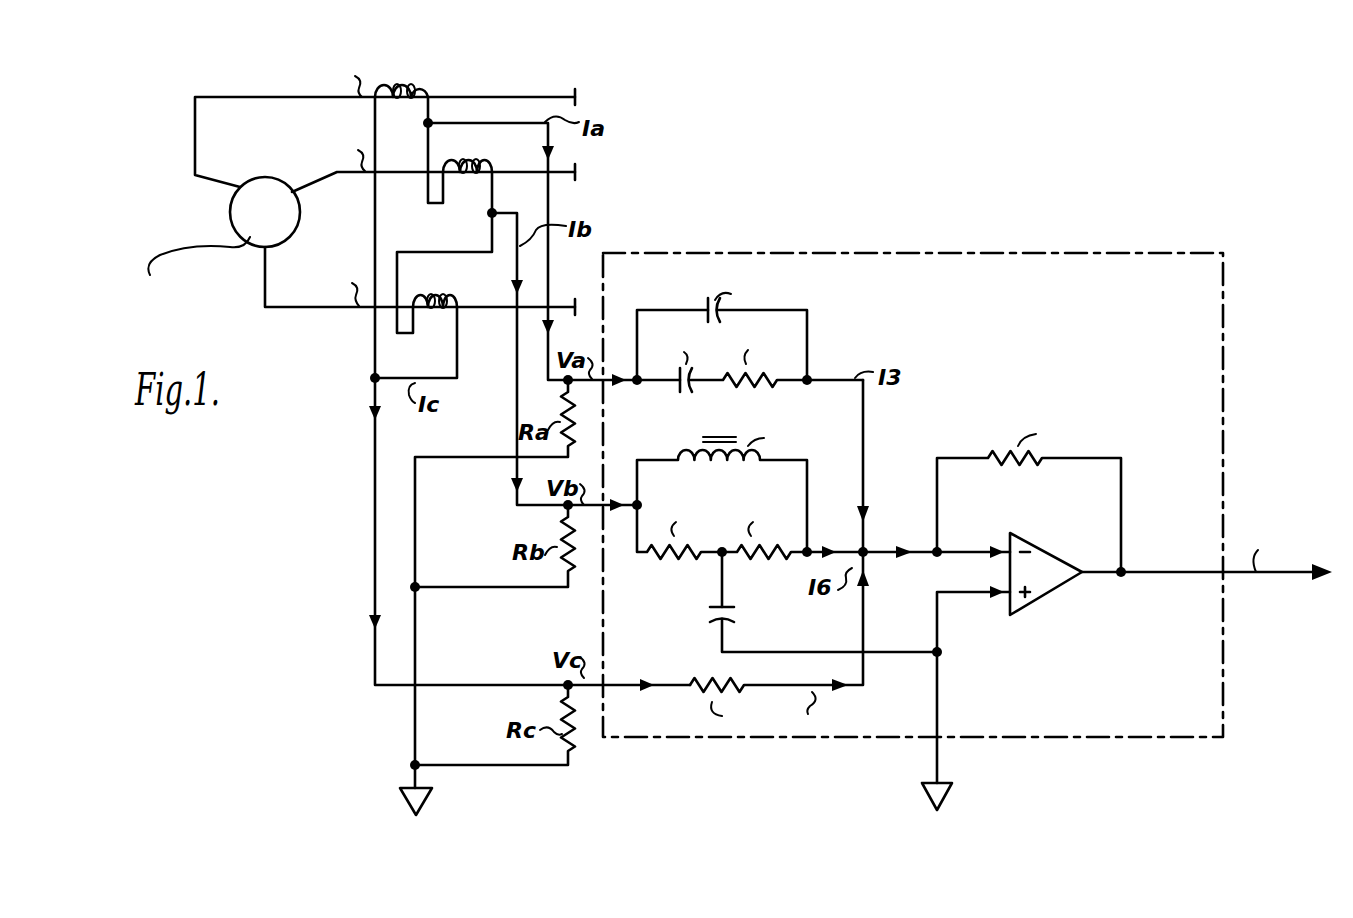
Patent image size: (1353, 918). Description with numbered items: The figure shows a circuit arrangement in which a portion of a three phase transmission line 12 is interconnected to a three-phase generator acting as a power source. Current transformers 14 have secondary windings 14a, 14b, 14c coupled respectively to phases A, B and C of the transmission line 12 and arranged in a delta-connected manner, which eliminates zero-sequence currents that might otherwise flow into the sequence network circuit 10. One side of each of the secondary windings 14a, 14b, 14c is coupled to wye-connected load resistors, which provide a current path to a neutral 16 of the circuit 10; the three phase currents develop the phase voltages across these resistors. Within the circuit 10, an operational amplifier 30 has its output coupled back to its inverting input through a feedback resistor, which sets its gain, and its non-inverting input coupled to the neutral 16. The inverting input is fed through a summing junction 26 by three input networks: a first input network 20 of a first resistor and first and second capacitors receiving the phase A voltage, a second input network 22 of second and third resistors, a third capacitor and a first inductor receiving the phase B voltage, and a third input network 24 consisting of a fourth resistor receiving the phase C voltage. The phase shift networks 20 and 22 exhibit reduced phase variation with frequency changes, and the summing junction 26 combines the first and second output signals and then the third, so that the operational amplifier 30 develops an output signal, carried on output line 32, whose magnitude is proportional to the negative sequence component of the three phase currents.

The sequence network circuit 10 is at (1170, 255).
The three phase transmission line 12 is at (618, 150).
The current transformers 14 is at (452, 209).
The secondary winding of phase A current transformer 14a is at (432, 90).
The secondary winding of phase B current transformer 14b is at (470, 168).
The secondary winding of phase C current transformer 14c is at (432, 300).
The neutral 16 is at (436, 798).
The first input network 20 is at (822, 334).
The second input network 22 is at (812, 500).
The third input network 24 is at (824, 682).
The summing junction 26 is at (946, 562).
The operational amplifier 30 is at (1050, 598).
The output terminal 32 is at (1268, 578).